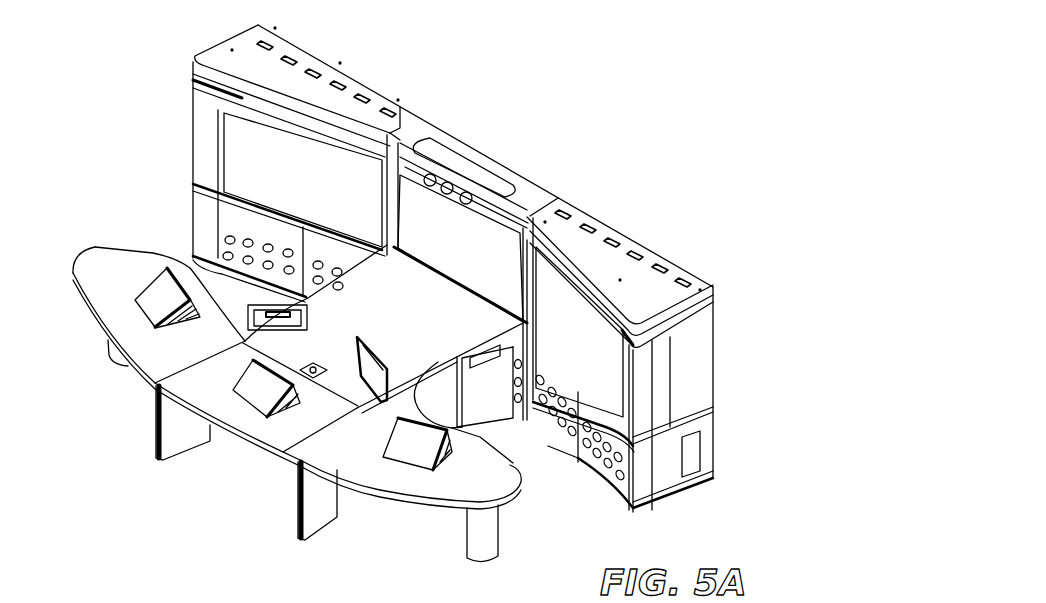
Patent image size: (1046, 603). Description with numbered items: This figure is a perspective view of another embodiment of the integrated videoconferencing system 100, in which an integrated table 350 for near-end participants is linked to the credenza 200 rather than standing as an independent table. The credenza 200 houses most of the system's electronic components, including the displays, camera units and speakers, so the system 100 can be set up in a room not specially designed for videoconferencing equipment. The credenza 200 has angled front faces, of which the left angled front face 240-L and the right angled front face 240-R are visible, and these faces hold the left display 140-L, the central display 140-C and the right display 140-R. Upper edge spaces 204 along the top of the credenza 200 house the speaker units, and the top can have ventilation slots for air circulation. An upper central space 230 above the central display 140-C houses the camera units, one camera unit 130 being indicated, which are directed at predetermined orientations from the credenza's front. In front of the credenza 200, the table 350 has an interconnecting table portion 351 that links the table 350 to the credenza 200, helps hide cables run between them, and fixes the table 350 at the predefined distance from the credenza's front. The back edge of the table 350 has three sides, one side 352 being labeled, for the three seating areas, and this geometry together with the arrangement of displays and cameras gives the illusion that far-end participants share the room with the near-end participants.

The integrated videoconferencing system 100 is at (652, 105).
The credenza 200 is at (219, 47).
The upper edge space 204 is at (193, 80).
The left display 140-L is at (303, 180).
The central display 140-C is at (460, 249).
The right display 140-R is at (579, 332).
The left angled front face 240-L is at (240, 214).
The right angled front face 240-R is at (548, 372).
The upper central space 230 is at (477, 160).
The camera unit 130 is at (481, 196).
The integrated table 350 is at (77, 254).
The interconnecting table portion 351 is at (424, 322).
The back edge side 352 is at (136, 367).